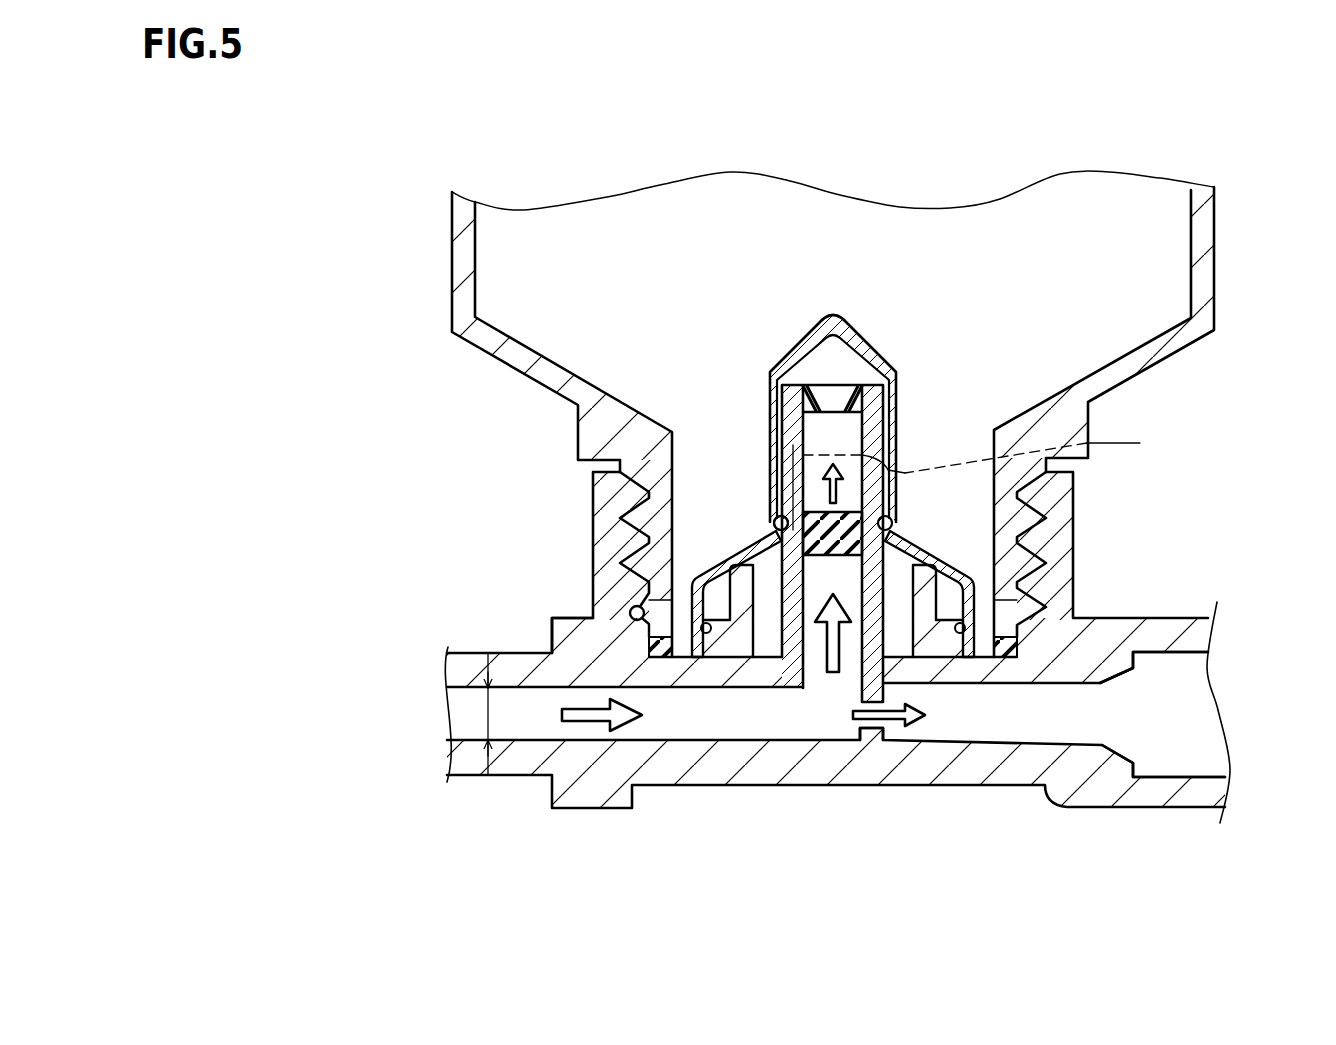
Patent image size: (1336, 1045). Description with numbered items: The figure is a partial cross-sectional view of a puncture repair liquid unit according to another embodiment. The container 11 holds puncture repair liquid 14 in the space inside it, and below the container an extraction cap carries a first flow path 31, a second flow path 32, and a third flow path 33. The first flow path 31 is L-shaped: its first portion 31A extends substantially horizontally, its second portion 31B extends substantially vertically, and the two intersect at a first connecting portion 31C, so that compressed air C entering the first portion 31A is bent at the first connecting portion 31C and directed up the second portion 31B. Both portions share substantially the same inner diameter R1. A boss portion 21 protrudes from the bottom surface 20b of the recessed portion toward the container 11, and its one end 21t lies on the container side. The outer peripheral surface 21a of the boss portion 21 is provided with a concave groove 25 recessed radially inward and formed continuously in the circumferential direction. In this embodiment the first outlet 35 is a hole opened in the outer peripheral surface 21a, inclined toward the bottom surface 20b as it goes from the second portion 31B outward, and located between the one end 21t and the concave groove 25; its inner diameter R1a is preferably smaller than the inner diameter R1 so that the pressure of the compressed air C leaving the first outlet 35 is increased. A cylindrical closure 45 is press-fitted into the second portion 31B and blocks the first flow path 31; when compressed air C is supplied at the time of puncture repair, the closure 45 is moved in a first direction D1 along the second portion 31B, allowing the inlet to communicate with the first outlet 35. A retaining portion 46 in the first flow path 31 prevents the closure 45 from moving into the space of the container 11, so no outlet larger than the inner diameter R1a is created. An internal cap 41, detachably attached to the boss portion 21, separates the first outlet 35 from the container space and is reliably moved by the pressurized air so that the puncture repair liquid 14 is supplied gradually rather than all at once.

The puncture repair liquid 14 is at (603, 242).
The retaining portion 46 is at (822, 398).
The internal cap 41 is at (866, 333).
The one end of the boss portion 21t is at (875, 397).
The container 11 is at (1214, 246).
The boss portion 21 is at (886, 437).
The inner diameter of the first outlet R1a is at (783, 497).
The closure 45 is at (964, 625).
The first outlet 35 is at (779, 500).
The first direction D1 is at (845, 494).
The outer peripheral surface of the boss portion 21a is at (772, 519).
The concave groove 25 is at (850, 548).
The bottom surface of the recessed portion 20b is at (633, 610).
The compressed air C is at (842, 648).
The inner diameter of the first flow path R1 is at (488, 715).
The first portion 31A is at (703, 718).
The second portion 31B is at (812, 663).
The first connecting portion 31C is at (856, 730).
The third flow path 33 is at (882, 727).
The second flow path 32 is at (1065, 717).
The first flow path 31 is at (850, 878).